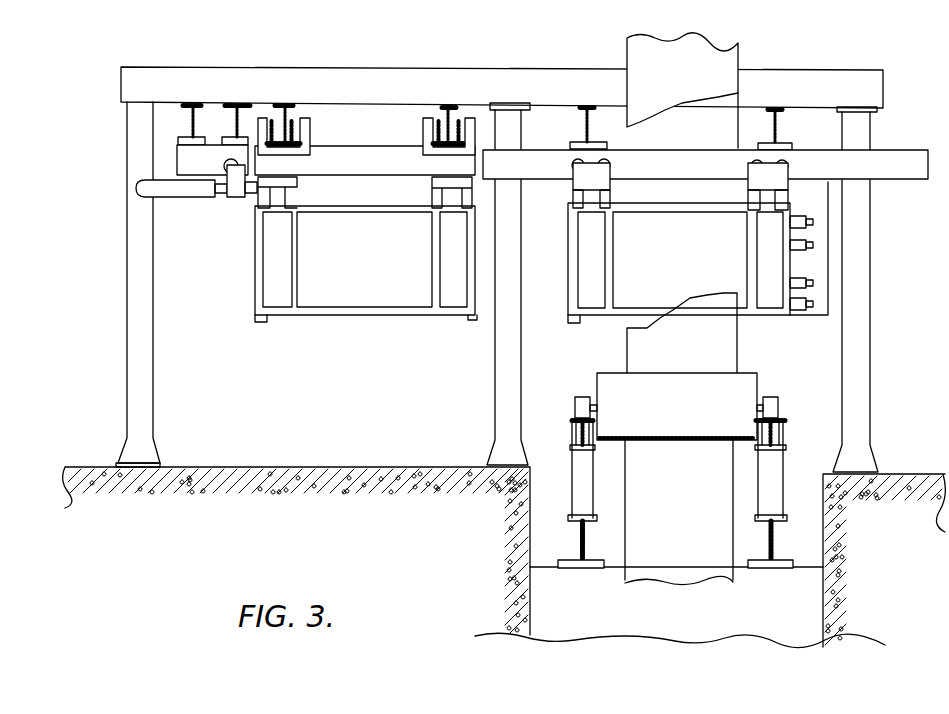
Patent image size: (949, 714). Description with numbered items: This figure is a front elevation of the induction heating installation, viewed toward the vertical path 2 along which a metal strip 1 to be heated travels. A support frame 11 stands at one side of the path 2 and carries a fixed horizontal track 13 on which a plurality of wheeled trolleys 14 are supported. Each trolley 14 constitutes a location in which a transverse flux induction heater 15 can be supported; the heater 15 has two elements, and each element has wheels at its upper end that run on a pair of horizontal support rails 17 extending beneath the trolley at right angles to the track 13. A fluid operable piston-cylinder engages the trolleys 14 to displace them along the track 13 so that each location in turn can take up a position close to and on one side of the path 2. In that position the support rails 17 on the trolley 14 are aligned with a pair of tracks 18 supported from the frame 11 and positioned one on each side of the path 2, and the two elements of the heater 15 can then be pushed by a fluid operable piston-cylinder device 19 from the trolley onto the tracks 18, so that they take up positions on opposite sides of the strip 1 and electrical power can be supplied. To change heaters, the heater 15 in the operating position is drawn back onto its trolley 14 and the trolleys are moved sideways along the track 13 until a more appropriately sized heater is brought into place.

The metal strip 1 is at (713, 355).
The vertical path 2 is at (683, 15).
The support frame 11 is at (342, 64).
The fixed horizontal track 13 is at (298, 138).
The wheeled trolley 14 is at (372, 163).
The transverse flux induction heater 15 is at (382, 315).
The horizontal support rails 17 is at (405, 168).
The tracks 18 is at (905, 172).
The fluid operable piston-cylinder device 19 is at (174, 190).